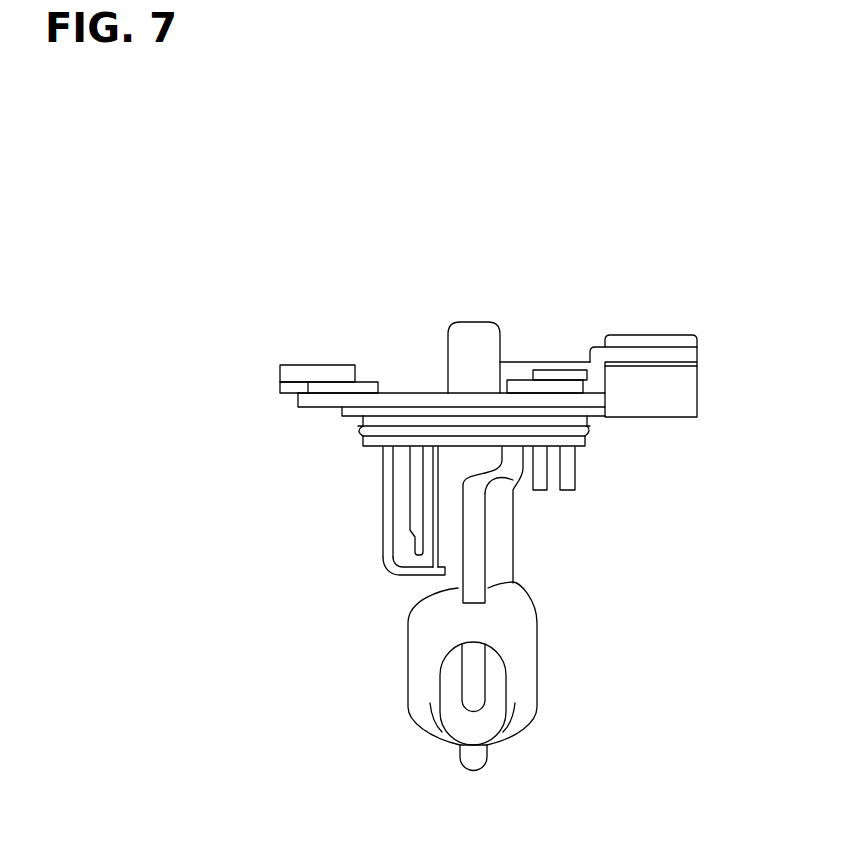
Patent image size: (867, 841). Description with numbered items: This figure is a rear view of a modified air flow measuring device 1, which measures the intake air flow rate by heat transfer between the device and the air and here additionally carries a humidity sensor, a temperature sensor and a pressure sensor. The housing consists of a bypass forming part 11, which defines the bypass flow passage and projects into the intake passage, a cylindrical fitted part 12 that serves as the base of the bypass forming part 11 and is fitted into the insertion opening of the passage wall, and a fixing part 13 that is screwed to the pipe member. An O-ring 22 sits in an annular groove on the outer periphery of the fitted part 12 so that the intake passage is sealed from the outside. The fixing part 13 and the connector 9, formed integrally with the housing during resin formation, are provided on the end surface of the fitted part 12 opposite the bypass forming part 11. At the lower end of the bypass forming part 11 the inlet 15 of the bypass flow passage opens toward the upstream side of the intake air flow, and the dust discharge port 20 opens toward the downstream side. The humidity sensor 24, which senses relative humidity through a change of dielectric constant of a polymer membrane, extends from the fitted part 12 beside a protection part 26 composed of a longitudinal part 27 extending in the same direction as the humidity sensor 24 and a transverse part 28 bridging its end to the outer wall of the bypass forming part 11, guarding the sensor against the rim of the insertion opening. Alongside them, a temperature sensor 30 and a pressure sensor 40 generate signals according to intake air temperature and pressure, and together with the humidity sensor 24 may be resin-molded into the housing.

The air flow measuring device 1 is at (320, 205).
The connector 9 is at (657, 375).
The bypass forming part 11 is at (505, 561).
The fitted part 12 is at (362, 441).
The fixing part 13 is at (415, 398).
The inlet 15 is at (485, 727).
The dust discharge port 20 is at (475, 667).
The O-ring 22 is at (595, 438).
The humidity sensor 24 is at (407, 497).
The protection part 26 is at (316, 565).
The longitudinal part 27 is at (388, 543).
The transverse part 28 is at (397, 577).
The temperature sensor 30 is at (537, 493).
The pressure sensor 40 is at (567, 493).